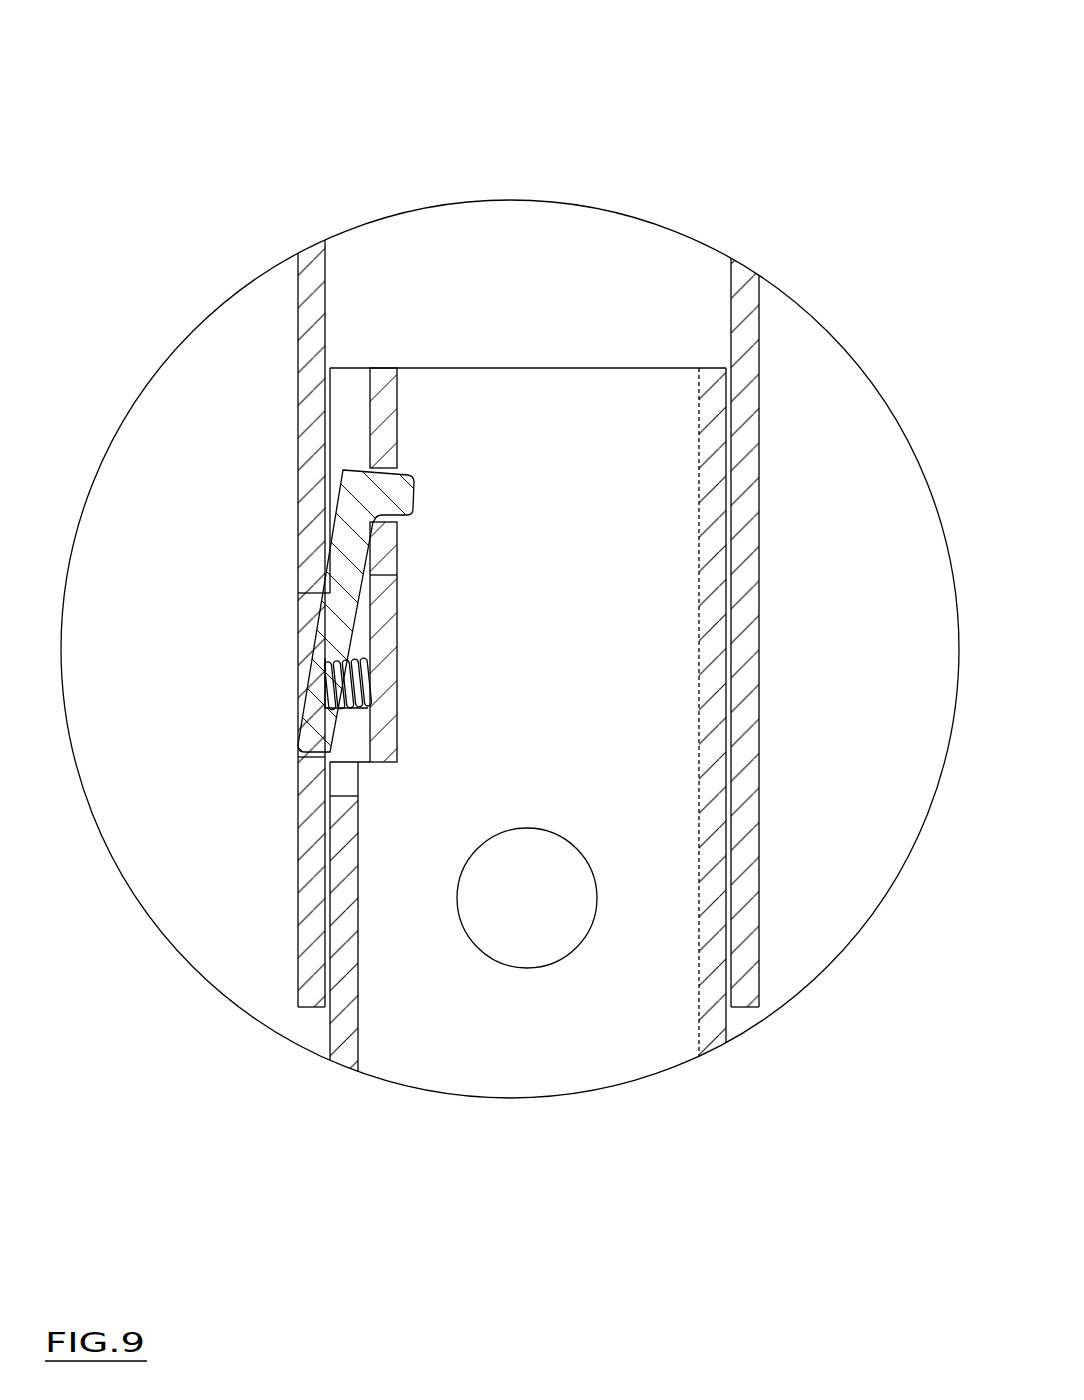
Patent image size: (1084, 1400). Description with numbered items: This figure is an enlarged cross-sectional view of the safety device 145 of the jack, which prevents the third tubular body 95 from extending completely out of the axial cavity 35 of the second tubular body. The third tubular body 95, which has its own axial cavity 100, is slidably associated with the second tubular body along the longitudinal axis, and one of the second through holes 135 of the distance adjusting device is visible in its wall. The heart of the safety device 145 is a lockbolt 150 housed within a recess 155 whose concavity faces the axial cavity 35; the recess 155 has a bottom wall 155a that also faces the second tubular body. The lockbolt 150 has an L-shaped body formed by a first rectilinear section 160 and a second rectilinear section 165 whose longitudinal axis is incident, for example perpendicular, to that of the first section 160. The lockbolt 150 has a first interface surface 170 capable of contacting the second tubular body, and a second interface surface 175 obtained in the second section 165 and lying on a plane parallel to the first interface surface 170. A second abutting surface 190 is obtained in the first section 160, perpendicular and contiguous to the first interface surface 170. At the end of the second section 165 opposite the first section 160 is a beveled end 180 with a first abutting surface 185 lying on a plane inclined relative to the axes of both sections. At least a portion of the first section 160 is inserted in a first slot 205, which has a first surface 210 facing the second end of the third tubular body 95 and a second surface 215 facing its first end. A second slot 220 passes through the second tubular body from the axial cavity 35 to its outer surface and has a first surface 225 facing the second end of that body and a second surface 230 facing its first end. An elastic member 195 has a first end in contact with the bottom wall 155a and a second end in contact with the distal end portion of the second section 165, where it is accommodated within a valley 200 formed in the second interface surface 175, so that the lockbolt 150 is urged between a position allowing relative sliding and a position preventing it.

The safety device 145 is at (178, 56).
The lockbolt 150 is at (241, 618).
The recess 155 is at (353, 398).
The bottom wall 155a is at (372, 610).
The second surface 215 is at (398, 408).
The second abutting surface 190 is at (405, 473).
The first rectilinear section 160 is at (413, 500).
The first slot 205 is at (410, 501).
The first surface 210 is at (375, 508).
The first interface surface 170 is at (325, 577).
The second interface surface 175 is at (398, 573).
The second surface 230 is at (297, 594).
The second slot 220 is at (292, 625).
The second rectilinear section 165 is at (330, 642).
The elastic member 195 is at (372, 685).
The valley 200 is at (325, 696).
The first abutting surface 185 is at (333, 764).
The beveled end 180 is at (223, 812).
The first surface 225 is at (322, 760).
The third tubular body 95 is at (710, 537).
The axial cavity 35 is at (750, 705).
The axial cavity 100 is at (545, 1068).
The second through holes 135 is at (557, 970).